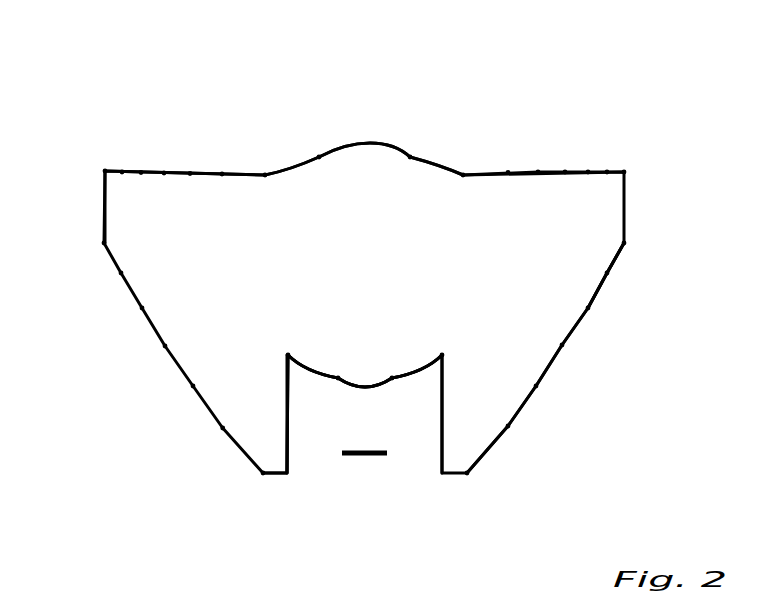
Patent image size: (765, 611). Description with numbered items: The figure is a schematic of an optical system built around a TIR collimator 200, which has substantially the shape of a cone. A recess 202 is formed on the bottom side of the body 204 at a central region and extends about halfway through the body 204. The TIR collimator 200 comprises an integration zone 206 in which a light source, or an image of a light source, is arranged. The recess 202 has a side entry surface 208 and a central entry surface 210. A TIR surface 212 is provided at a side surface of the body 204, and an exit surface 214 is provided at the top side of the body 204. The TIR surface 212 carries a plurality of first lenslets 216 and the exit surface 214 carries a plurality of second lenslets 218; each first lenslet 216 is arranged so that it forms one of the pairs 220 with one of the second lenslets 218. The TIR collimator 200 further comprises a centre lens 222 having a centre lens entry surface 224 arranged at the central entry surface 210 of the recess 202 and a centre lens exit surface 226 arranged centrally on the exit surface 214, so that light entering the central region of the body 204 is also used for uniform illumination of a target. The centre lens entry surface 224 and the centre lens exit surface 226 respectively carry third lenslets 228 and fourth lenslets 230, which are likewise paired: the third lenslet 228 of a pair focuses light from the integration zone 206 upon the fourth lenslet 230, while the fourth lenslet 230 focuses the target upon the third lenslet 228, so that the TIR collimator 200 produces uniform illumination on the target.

The TIR collimator 200 is at (193, 112).
The recess 202 is at (382, 412).
The body 204 is at (138, 217).
The integration zone 206 is at (365, 455).
The side entry surface 208 is at (287, 460).
The central entry surface 210 is at (338, 380).
The TIR surface 212 is at (553, 368).
The exit surface 214 is at (578, 170).
The first lenslets 216 is at (585, 323).
The second lenslets 218 is at (527, 165).
The pairs 220 is at (605, 158).
The centre lens 222 is at (353, 253).
The centre lens entry surface 224 is at (315, 377).
The centre lens exit surface 226 is at (378, 143).
The third lenslets 228 is at (427, 390).
The fourth lenslets 230 is at (437, 157).